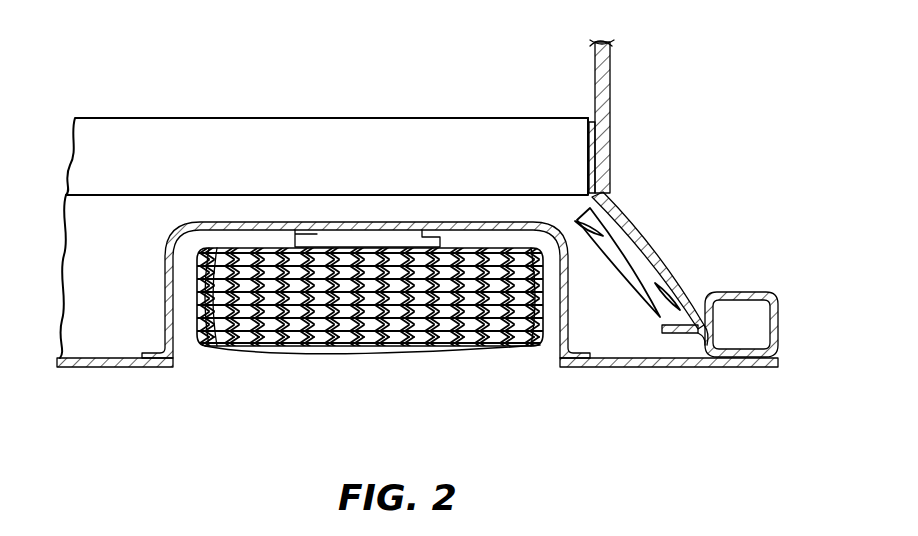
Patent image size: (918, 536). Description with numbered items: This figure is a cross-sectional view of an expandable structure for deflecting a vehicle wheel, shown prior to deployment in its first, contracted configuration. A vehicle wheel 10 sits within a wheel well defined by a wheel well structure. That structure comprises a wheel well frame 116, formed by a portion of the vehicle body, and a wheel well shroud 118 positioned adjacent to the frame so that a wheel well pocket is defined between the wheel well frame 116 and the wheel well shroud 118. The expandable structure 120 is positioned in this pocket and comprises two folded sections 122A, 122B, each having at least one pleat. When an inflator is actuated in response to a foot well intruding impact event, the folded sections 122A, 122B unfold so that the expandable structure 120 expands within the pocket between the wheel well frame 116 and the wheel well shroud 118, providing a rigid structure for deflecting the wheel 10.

The vehicle wheel 10 is at (475, 345).
The wheel well frame 116 is at (627, 212).
The wheel well shroud 118 is at (558, 340).
The expandable structure 120 is at (627, 252).
The folded section 122A is at (668, 313).
The folded section 122B is at (585, 215).